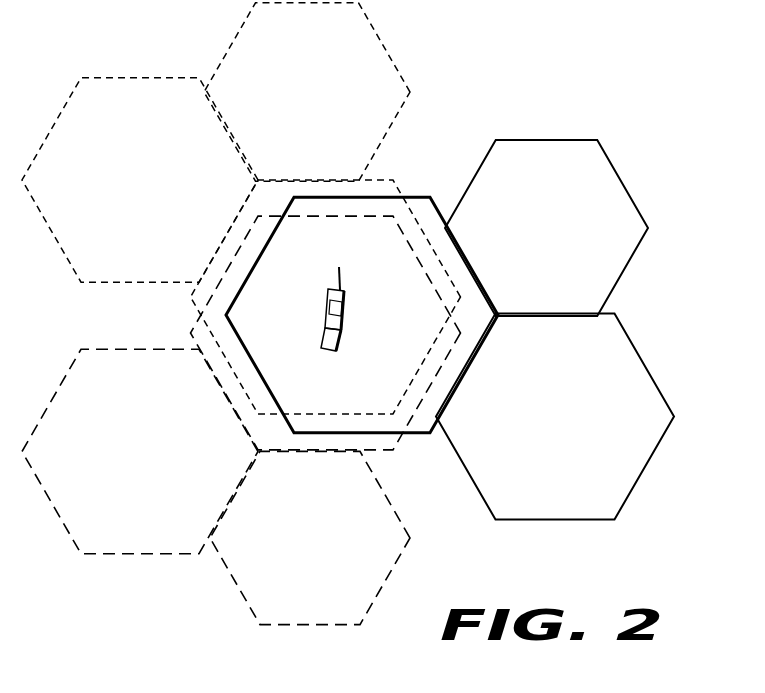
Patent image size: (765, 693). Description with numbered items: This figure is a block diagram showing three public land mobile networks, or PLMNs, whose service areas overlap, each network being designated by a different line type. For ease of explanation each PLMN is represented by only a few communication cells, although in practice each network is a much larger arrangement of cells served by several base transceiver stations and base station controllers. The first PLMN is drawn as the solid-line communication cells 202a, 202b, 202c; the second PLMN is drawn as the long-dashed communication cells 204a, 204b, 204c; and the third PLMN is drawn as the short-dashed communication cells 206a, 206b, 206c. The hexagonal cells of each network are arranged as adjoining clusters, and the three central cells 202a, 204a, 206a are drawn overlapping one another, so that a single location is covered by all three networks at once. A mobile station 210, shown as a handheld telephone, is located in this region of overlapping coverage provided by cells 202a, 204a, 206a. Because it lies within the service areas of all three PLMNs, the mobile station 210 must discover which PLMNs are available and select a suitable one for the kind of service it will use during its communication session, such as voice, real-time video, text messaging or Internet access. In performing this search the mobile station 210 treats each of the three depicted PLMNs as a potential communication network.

The communication cell 202a is at (430, 434).
The communication cell 202b is at (582, 432).
The communication cell 202c is at (572, 244).
The communication cell 204a is at (191, 333).
The communication cell 204b is at (167, 466).
The communication cell 204c is at (335, 554).
The communication cell 206a is at (394, 180).
The communication cell 206b is at (165, 194).
The communication cell 206c is at (333, 109).
The mobile station 210 is at (346, 311).